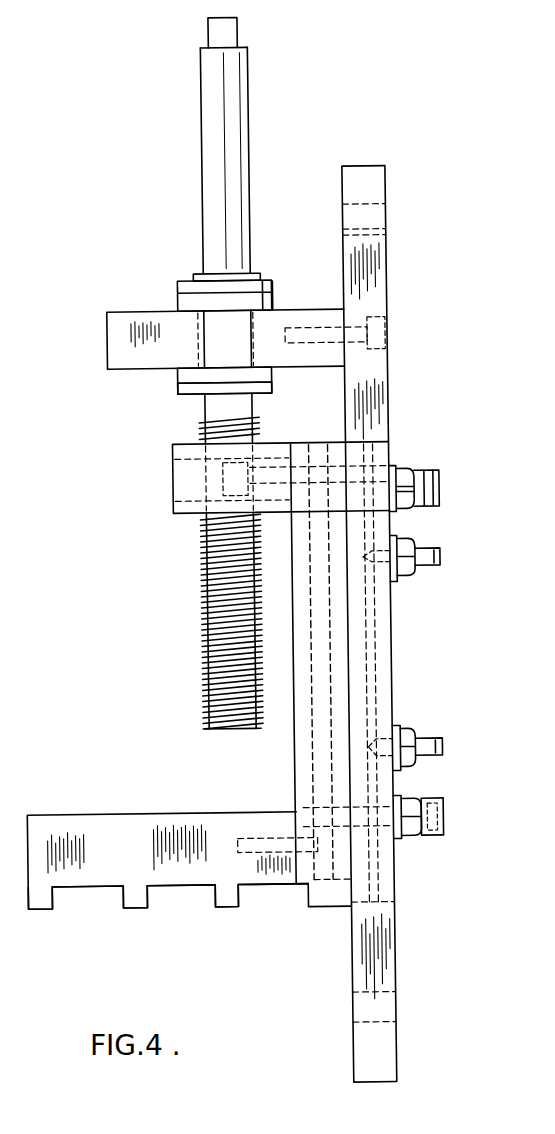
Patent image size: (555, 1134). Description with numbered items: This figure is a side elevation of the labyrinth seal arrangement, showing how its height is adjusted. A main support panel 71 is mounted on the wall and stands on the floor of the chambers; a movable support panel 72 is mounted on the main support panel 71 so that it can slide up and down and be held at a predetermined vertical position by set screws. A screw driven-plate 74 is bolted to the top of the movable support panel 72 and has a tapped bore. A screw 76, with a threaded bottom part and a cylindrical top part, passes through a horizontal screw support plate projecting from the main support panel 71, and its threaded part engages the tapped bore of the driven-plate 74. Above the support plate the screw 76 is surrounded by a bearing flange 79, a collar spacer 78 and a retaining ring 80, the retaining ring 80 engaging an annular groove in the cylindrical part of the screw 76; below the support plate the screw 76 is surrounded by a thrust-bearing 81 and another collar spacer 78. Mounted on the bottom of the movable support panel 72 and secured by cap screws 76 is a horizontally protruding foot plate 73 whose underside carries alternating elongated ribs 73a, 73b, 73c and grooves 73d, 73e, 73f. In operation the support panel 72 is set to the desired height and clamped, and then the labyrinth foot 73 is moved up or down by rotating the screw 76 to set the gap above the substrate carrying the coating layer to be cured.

The main support panel 71 is at (391, 962).
The movable support panel 72 is at (336, 662).
The foot plate 73 is at (87, 818).
The elongated rib 73a is at (40, 908).
The elongated rib 73b is at (120, 908).
The elongated rib 73c is at (216, 908).
The groove 73d is at (94, 885).
The groove 73e is at (173, 885).
The groove 73f is at (261, 885).
The screw driven-plate 74 is at (174, 512).
The screw 76 is at (427, 820).
The collar spacer 78 is at (279, 298).
The bearing flange 79 is at (276, 279).
The retaining ring 80 is at (199, 273).
The thrust-bearing 81 is at (182, 392).